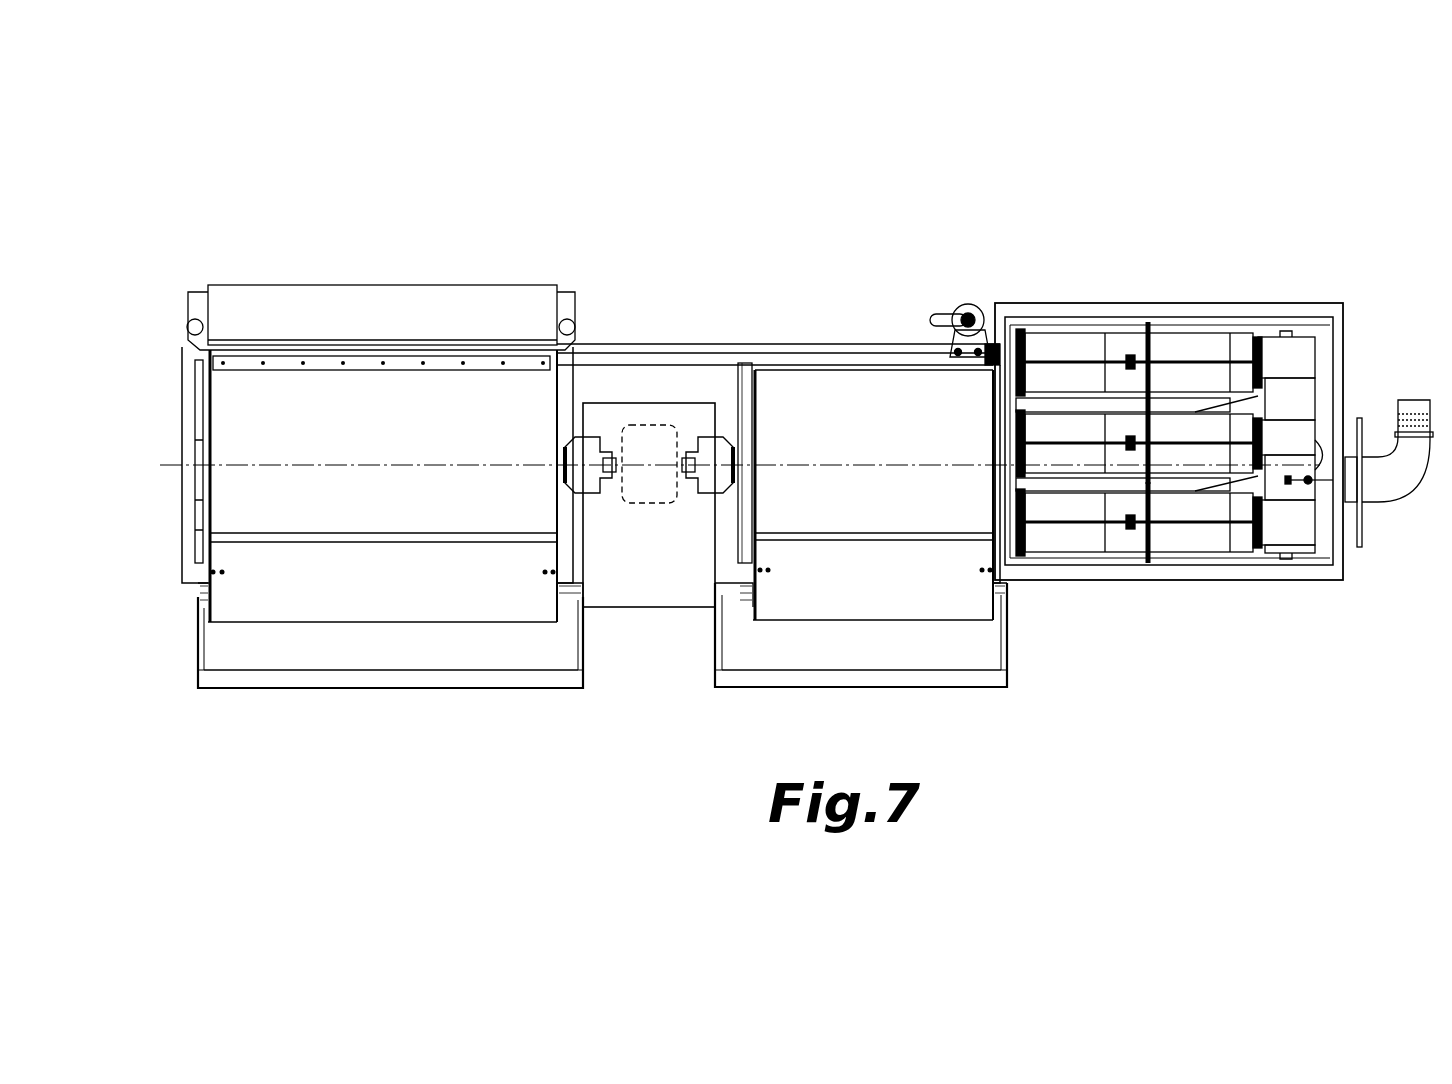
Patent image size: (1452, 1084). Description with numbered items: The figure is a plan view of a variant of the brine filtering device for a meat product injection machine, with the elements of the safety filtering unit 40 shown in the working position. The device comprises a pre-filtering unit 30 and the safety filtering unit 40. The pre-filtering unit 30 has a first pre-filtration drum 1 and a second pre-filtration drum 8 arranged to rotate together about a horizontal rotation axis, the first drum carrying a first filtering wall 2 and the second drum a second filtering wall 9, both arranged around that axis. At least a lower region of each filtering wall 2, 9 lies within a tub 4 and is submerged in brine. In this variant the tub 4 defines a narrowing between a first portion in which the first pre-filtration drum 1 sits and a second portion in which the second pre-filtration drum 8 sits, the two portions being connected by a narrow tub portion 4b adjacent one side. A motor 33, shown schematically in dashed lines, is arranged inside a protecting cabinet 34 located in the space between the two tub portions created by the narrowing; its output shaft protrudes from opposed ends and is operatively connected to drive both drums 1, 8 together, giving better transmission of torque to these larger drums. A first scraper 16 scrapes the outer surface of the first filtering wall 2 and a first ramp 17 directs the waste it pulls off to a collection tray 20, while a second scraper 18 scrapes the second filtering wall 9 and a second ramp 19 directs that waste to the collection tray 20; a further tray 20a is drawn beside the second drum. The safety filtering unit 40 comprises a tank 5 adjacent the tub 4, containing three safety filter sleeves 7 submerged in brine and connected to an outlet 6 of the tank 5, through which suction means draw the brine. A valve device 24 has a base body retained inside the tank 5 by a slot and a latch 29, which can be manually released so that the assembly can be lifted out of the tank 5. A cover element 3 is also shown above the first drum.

The first pre-filtration drum 1 is at (294, 392).
The first filtering wall 2 is at (436, 386).
The top cover 3 is at (369, 308).
The tub 4 is at (195, 525).
The narrow tub portion 4b is at (622, 380).
The tank 5 is at (1183, 565).
The outlet 6 is at (1412, 402).
The safety filter sleeves 7 is at (1128, 540).
The second pre-filtration drum 8 is at (876, 400).
The second filtering wall 9 is at (845, 392).
The first scraper 16 is at (315, 540).
The first ramp 17 is at (480, 610).
The second scraper 18 is at (838, 540).
The second ramp 19 is at (937, 607).
The collection tray 20 is at (398, 660).
The collecting tub 20a is at (898, 660).
The valve device 24 is at (1298, 545).
The latch 29 is at (1310, 485).
The pre-filtering unit 30 is at (706, 252).
The motor 33 is at (655, 500).
The protecting cabinet 34 is at (635, 598).
The safety filtering unit 40 is at (1160, 270).